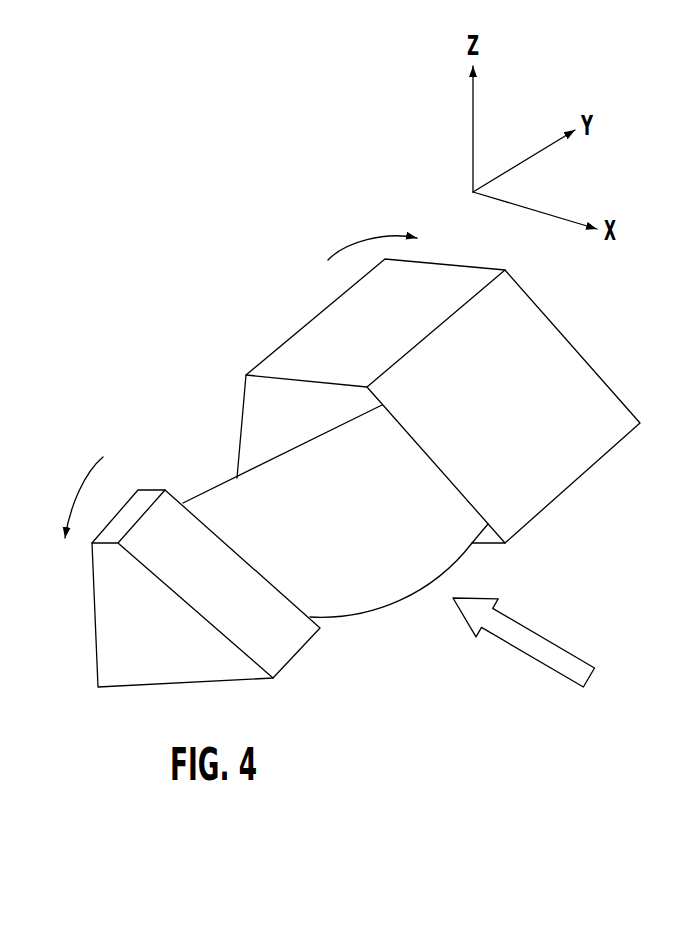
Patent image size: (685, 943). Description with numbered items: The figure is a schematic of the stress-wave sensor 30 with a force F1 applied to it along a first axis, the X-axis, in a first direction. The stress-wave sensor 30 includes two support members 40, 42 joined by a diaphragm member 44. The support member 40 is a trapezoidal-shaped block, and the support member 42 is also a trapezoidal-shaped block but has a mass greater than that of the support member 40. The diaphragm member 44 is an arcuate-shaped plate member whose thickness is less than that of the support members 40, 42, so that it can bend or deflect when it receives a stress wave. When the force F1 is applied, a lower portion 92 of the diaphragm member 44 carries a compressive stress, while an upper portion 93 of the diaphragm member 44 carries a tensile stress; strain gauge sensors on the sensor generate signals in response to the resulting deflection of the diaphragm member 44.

The stress-wave sensor 30 is at (470, 244).
The support member 40 is at (273, 679).
The support member 42 is at (587, 472).
The diaphragm member 44 is at (463, 563).
The lower portion 92 is at (388, 607).
The upper portion 93 is at (221, 484).
The force F1 is at (543, 633).